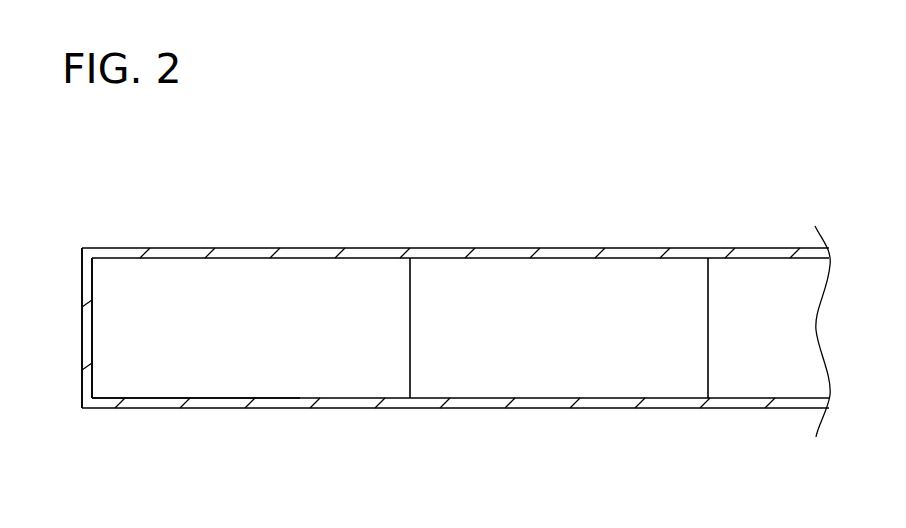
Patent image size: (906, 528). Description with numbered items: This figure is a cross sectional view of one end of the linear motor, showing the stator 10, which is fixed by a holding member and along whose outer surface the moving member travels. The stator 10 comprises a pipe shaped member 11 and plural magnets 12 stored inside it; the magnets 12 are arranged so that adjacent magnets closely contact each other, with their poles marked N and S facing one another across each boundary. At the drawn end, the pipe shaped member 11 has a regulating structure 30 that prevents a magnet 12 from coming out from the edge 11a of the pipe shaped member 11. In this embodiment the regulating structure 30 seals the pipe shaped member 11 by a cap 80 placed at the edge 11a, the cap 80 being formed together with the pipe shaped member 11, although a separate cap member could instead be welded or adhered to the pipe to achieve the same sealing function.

The stator 10 is at (664, 228).
The pipe shaped member 11 is at (511, 250).
The edge 11a is at (137, 409).
The magnet 12 is at (270, 378).
The regulating structure 30 is at (68, 256).
The cap 80 is at (88, 329).